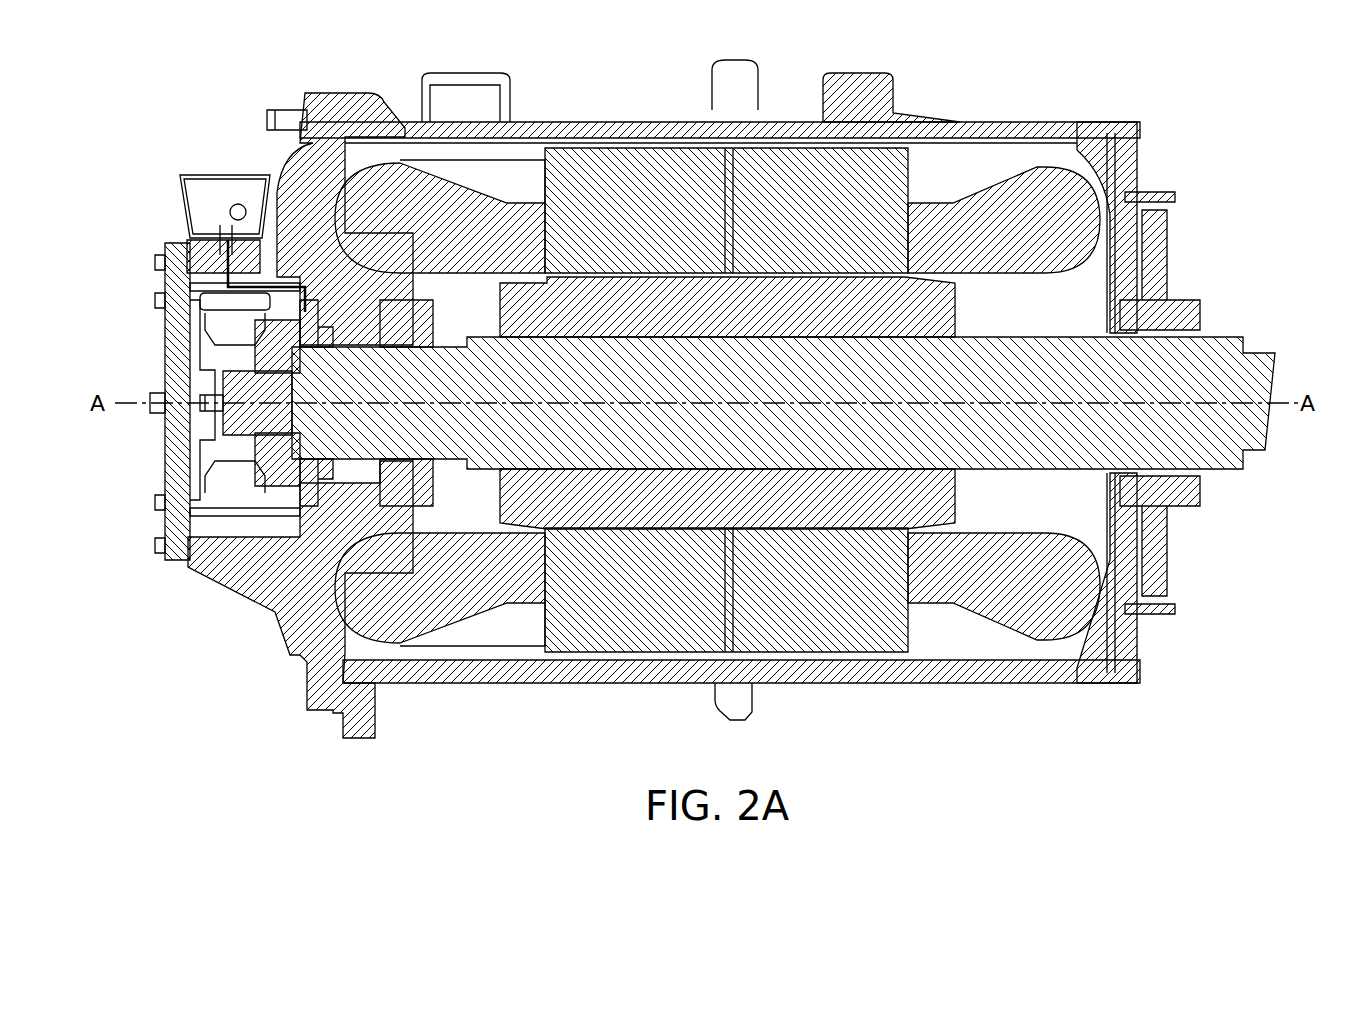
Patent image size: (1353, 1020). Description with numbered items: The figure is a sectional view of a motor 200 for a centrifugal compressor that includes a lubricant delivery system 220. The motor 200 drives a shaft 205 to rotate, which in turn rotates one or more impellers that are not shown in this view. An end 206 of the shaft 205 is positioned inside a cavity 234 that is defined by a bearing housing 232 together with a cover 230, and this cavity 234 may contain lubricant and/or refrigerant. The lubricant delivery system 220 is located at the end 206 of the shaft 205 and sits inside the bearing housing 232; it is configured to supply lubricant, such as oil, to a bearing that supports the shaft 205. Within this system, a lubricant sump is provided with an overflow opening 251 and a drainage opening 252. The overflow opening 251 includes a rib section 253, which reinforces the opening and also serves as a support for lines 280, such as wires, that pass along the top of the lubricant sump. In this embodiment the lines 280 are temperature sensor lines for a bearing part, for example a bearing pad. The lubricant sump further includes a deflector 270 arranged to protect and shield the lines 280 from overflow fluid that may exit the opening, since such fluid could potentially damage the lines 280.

The motor 200 is at (940, 120).
The shaft 205 is at (1217, 357).
The end of the shaft 206 is at (262, 423).
The lubricant delivery system 220 is at (295, 690).
The cover 230 is at (177, 503).
The bearing housing 232 is at (282, 195).
The cavity 234 is at (237, 300).
The overflow opening 251 is at (217, 325).
The drainage opening 252 is at (238, 517).
The rib section 253 is at (218, 305).
The deflector 270 is at (210, 287).
The lines 280 is at (235, 215).